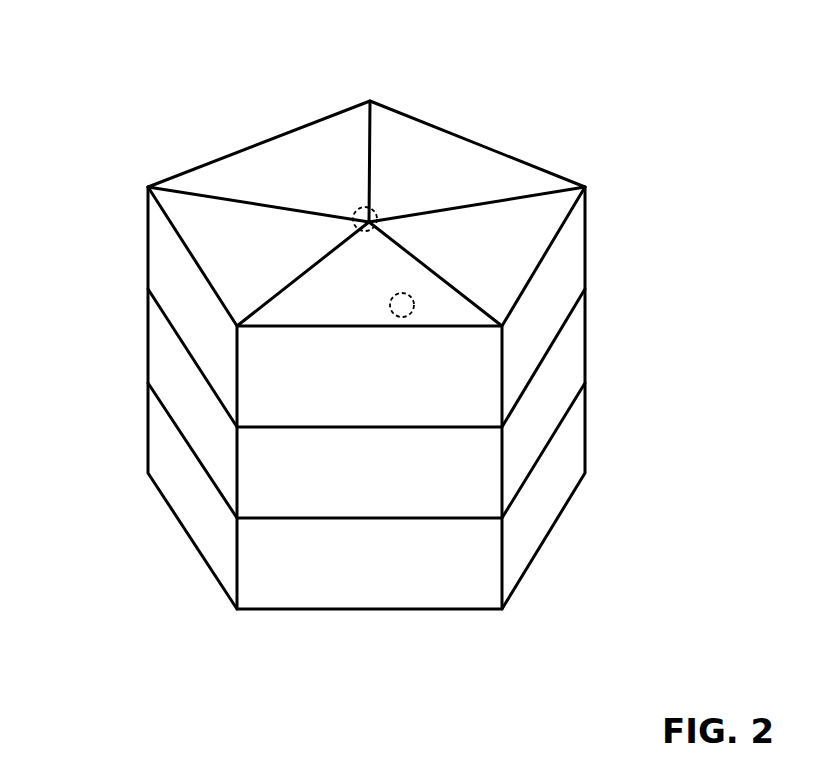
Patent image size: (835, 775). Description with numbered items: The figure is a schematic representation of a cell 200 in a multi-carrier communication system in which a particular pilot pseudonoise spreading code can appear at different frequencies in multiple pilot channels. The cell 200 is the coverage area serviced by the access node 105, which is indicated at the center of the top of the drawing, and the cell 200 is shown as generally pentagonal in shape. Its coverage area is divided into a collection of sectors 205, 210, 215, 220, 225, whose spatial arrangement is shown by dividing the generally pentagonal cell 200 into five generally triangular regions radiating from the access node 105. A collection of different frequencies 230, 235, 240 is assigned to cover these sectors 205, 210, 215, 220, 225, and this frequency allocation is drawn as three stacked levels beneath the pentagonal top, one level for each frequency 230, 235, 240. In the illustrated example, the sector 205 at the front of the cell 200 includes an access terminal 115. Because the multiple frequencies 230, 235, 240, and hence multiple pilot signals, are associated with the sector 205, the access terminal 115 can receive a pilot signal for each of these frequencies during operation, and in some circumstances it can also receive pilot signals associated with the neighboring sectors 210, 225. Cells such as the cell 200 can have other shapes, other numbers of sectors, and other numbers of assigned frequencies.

The cell 200 is at (641, 84).
The access node 105 is at (352, 208).
The access terminal 115 is at (414, 311).
The sector 205 is at (315, 296).
The sector 210 is at (205, 238).
The sector 215 is at (285, 158).
The sector 220 is at (442, 156).
The sector 225 is at (530, 244).
The frequency 230 is at (585, 233).
The frequency 235 is at (585, 338).
The frequency 240 is at (585, 430).